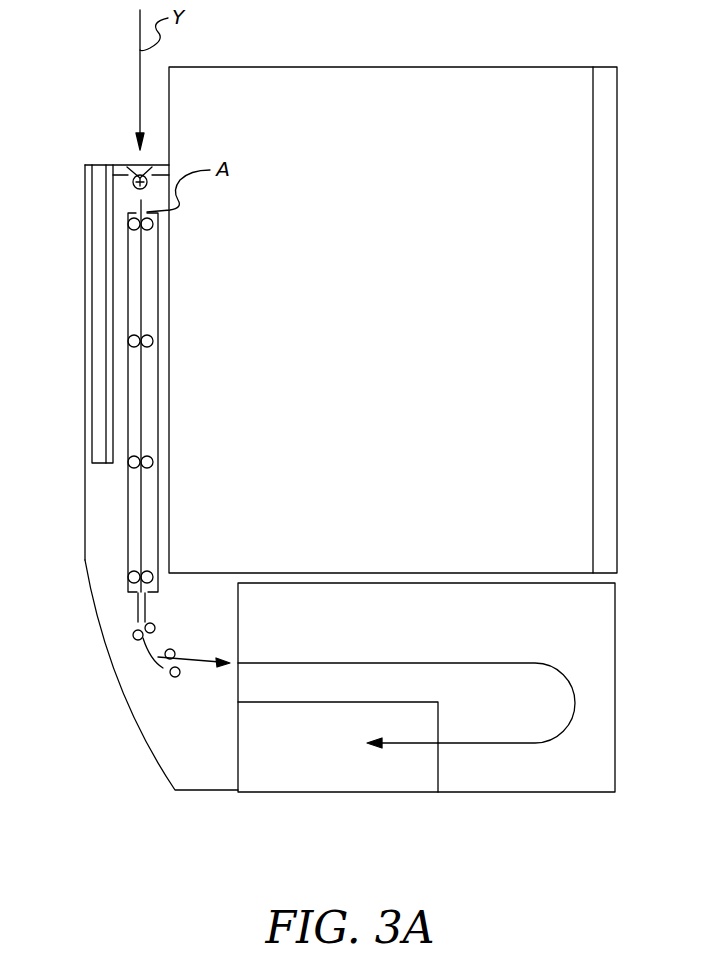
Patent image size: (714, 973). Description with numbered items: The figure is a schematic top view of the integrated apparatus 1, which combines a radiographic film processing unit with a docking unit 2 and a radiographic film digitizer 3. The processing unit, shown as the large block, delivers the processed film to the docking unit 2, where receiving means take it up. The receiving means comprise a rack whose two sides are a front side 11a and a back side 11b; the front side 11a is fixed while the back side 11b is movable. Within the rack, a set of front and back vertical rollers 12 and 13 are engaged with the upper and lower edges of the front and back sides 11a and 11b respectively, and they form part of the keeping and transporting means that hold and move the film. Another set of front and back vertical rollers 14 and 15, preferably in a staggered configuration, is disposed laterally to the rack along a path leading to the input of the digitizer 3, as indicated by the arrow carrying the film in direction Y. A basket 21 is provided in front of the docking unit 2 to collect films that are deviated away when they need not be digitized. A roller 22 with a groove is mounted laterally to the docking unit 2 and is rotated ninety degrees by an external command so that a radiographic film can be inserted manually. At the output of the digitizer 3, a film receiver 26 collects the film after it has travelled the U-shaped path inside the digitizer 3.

The integrated apparatus 1 is at (385, 103).
The docking unit 2 is at (208, 770).
The radiographic film digitizer 3 is at (600, 667).
The front side 11a is at (158, 588).
The back side 11b is at (132, 594).
The front vertical rollers 12 is at (130, 223).
The back vertical rollers 13 is at (153, 227).
The front vertical rollers 14 is at (133, 636).
The back vertical rollers 15 is at (155, 625).
The basket 21 is at (97, 200).
The roller 22 is at (137, 174).
The film receiver 26 is at (397, 770).